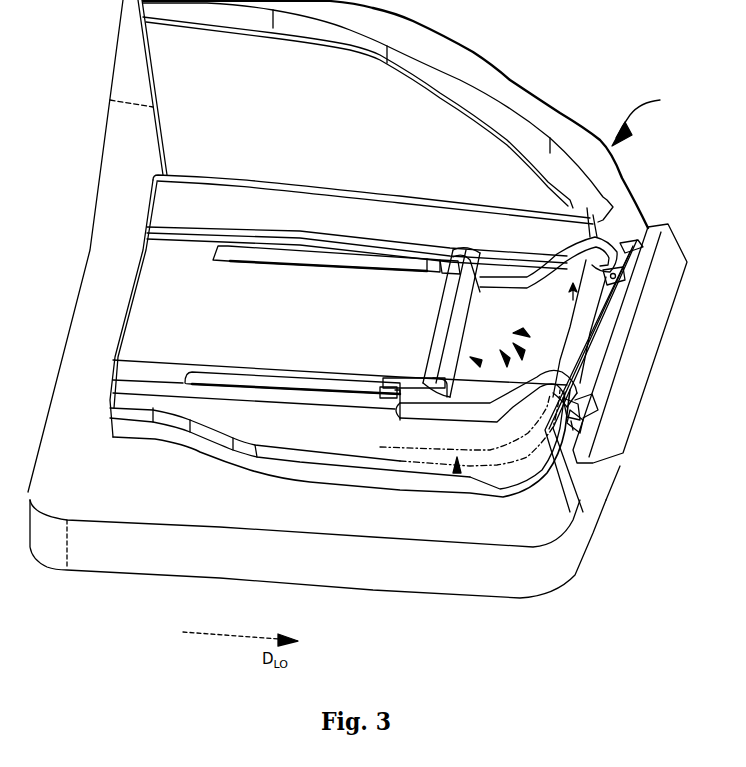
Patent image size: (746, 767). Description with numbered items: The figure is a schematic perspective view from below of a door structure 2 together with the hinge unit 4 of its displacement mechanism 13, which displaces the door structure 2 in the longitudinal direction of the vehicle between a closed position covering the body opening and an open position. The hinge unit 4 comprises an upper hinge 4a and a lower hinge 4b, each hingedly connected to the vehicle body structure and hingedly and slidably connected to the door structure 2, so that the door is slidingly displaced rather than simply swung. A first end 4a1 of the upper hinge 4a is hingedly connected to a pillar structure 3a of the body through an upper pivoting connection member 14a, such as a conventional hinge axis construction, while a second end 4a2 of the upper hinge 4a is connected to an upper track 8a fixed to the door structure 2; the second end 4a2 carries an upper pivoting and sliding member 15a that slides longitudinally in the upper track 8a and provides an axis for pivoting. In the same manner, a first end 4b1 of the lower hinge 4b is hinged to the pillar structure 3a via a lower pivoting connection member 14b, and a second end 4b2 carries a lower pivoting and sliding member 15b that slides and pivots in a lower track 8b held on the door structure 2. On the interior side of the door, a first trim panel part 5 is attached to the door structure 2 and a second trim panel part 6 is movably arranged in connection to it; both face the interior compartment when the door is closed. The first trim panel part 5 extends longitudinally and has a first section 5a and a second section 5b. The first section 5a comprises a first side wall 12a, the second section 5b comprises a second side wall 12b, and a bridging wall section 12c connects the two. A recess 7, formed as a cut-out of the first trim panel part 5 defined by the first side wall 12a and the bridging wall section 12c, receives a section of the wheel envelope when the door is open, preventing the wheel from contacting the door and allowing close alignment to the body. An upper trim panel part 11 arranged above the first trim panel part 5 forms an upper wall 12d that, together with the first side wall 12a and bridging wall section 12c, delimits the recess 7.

The door structure 2 is at (105, 290).
The pillar structure 3a is at (678, 240).
The hinge unit 4 is at (466, 480).
The upper hinge 4a is at (585, 237).
The first end of the upper hinge 4a1 is at (620, 227).
The second end of the upper hinge 4a2 is at (507, 287).
The lower hinge 4b is at (520, 405).
The first end of the lower hinge 4b1 is at (607, 387).
The second end of the lower hinge 4b2 is at (397, 425).
The first trim panel part 5 is at (162, 340).
The first section of the first trim panel part 5a is at (565, 385).
The second section of the first trim panel part 5b is at (168, 296).
The second trim panel part 6 is at (433, 425).
The recess 7 is at (583, 540).
The upper track 8a is at (270, 252).
The lower track 8b is at (265, 383).
The upper trim panel part 11 is at (203, 200).
The first side wall 12a is at (607, 367).
The second side wall 12b is at (168, 317).
The bridging wall section 12c is at (553, 430).
The upper wall 12d is at (613, 347).
The displacement mechanism 13 is at (647, 120).
The upper pivoting connection member 14a is at (615, 280).
The lower pivoting connection member 14b is at (605, 424).
The upper pivoting and sliding member 15a is at (443, 265).
The lower pivoting and sliding member 15b is at (380, 392).